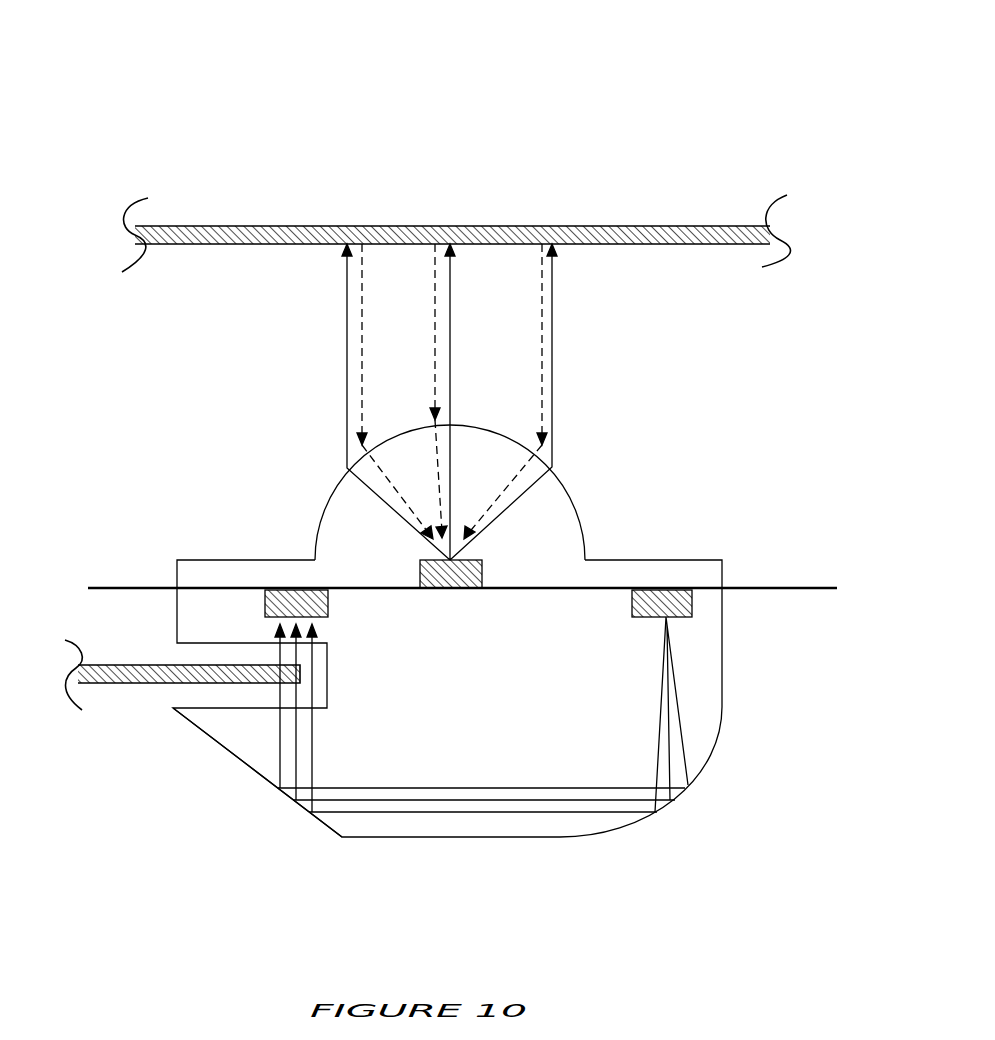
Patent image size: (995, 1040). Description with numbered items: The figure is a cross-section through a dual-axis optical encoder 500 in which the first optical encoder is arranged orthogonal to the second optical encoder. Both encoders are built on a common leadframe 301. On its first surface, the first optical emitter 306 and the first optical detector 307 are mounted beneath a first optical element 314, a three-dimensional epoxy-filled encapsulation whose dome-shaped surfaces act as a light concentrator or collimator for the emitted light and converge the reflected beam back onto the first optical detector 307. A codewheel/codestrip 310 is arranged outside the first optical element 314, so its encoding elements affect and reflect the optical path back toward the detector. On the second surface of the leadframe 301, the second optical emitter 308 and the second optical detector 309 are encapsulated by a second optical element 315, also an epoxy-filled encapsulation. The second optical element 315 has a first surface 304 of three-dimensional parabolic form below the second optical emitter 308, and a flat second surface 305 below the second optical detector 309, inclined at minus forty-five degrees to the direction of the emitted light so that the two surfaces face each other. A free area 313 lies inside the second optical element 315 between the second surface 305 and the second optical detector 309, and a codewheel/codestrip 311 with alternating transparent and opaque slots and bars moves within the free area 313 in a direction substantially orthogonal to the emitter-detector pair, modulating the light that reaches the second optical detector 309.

The dual-axis optical encoder 500 is at (713, 113).
The codewheel/codestrip 310 is at (622, 226).
The first optical element 314 is at (555, 535).
The first surface 304 is at (655, 812).
The second surface 305 is at (318, 823).
The second optical element 315 is at (462, 825).
The leadframe 301 is at (797, 587).
The first optical emitter 306 is at (475, 623).
The first optical detector 307 is at (457, 588).
The second optical detector 309 is at (328, 600).
The second optical emitter 308 is at (632, 607).
The codewheel/codestrip 311 is at (120, 684).
The free area 313 is at (320, 672).